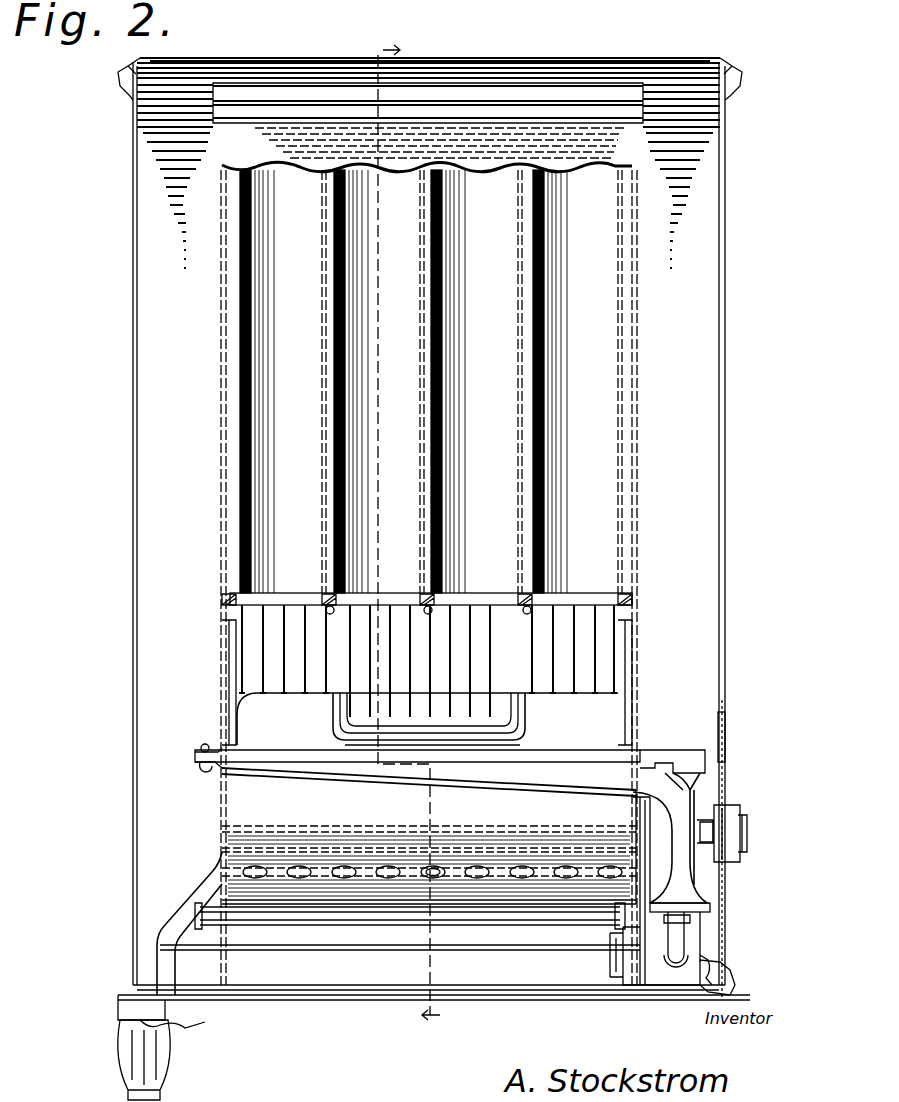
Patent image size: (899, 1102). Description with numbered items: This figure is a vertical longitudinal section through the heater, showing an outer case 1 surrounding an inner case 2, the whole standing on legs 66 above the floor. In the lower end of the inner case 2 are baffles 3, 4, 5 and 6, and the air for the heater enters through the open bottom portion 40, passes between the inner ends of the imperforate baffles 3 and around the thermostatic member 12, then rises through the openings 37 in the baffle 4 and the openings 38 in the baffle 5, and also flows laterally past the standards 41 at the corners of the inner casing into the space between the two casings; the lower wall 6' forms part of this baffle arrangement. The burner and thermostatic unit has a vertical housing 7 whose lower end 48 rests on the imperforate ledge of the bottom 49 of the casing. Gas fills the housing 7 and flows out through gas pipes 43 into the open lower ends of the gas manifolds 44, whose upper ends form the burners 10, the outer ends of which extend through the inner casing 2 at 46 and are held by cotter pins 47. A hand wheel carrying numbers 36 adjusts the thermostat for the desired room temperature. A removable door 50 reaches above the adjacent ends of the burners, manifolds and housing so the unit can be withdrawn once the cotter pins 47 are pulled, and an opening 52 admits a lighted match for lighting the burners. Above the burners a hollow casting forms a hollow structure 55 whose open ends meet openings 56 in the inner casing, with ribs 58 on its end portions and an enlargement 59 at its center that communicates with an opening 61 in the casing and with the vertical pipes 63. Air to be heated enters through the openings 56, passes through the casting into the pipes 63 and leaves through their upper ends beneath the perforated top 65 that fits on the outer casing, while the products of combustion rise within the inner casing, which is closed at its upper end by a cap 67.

The outer case 1 is at (727, 590).
The inner case 2 is at (638, 510).
The baffles 3 is at (405, 540).
The baffle 4 is at (322, 906).
The baffle 5 is at (330, 860).
The upper baffle 6 is at (429, 823).
The burner box lower wall 6' is at (429, 835).
The vertical housing 7 is at (647, 891).
The burner 10 is at (630, 762).
The thermostatic member 12 is at (562, 915).
The numbers 36 is at (724, 806).
The openings 37 is at (522, 880).
The openings 38 is at (433, 870).
The open bottom portion 40 is at (400, 968).
The standards 41 is at (186, 898).
The gas pipes 43 is at (682, 938).
The gas manifolds 44 is at (700, 882).
The extended ends 46 is at (205, 768).
The cotter pins 47 is at (203, 745).
The lower end of housing 48 is at (660, 995).
The bottom of casing 49 is at (712, 964).
The removable door 50 is at (726, 772).
The opening 52 is at (726, 726).
The hollow structure 55 is at (462, 618).
The openings 56 is at (220, 643).
The ribs 58 is at (265, 616).
The enlargement 59 is at (527, 718).
The opening 61 is at (360, 702).
The vertical pipes 63 is at (431, 381).
The perforated top 65 is at (600, 62).
The legs 66 is at (168, 1052).
The cap 67 is at (492, 82).